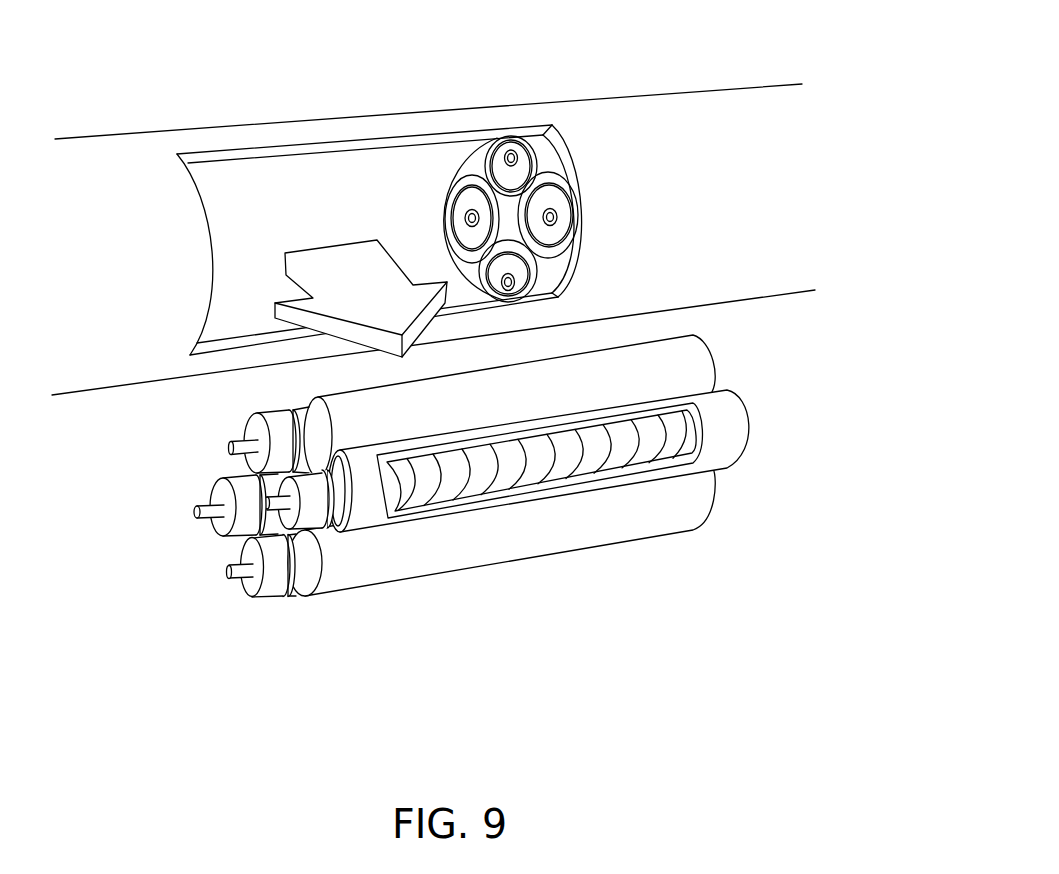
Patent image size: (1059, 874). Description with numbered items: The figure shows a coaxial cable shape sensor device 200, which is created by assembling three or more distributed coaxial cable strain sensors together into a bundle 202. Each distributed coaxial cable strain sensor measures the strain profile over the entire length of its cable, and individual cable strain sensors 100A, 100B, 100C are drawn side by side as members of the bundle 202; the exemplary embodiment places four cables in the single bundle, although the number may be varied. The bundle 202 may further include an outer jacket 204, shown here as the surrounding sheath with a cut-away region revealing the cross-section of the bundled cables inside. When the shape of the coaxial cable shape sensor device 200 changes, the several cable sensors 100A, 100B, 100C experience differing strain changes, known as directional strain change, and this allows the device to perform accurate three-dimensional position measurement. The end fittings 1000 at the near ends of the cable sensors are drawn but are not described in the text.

The coaxial cable shape sensor device 200 is at (433, 208).
The bundle 202 is at (464, 162).
The outer jacket 204 is at (607, 118).
The cable strain sensor 100A is at (705, 510).
The cable strain sensor 100B is at (737, 432).
The cable strain sensor 100C is at (708, 362).
The connector 1000 is at (217, 527).